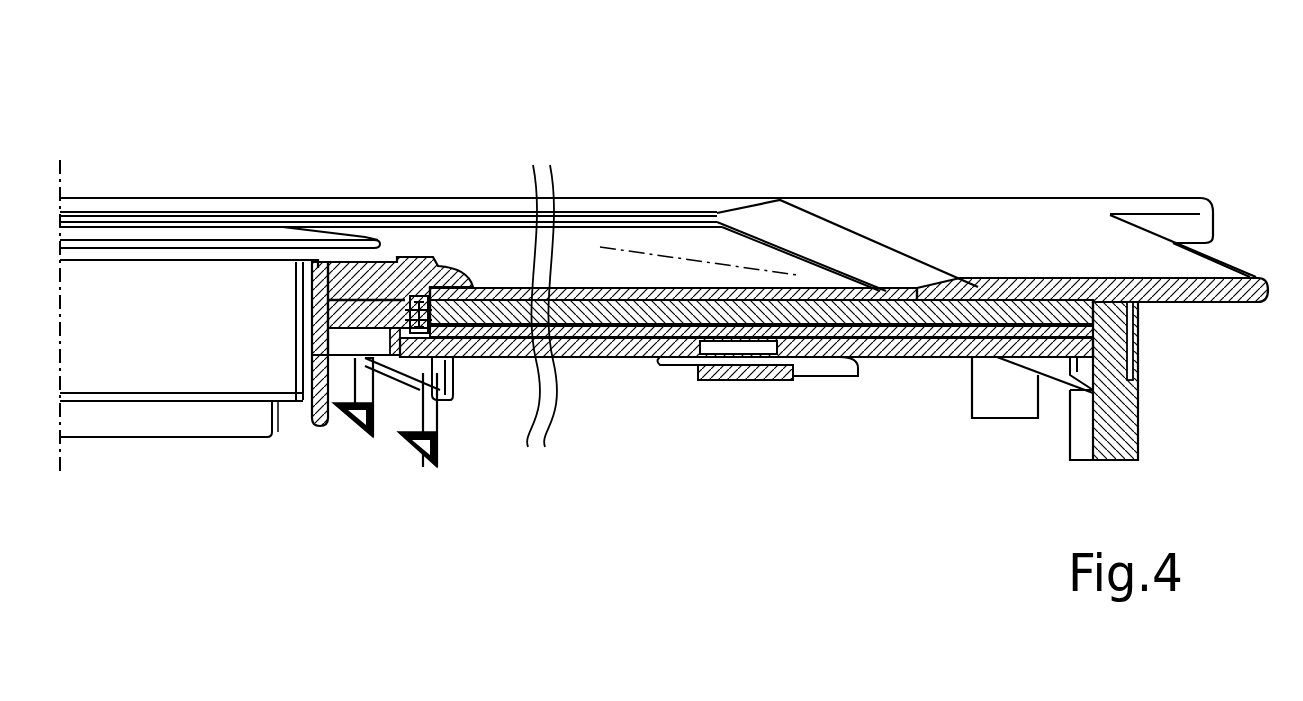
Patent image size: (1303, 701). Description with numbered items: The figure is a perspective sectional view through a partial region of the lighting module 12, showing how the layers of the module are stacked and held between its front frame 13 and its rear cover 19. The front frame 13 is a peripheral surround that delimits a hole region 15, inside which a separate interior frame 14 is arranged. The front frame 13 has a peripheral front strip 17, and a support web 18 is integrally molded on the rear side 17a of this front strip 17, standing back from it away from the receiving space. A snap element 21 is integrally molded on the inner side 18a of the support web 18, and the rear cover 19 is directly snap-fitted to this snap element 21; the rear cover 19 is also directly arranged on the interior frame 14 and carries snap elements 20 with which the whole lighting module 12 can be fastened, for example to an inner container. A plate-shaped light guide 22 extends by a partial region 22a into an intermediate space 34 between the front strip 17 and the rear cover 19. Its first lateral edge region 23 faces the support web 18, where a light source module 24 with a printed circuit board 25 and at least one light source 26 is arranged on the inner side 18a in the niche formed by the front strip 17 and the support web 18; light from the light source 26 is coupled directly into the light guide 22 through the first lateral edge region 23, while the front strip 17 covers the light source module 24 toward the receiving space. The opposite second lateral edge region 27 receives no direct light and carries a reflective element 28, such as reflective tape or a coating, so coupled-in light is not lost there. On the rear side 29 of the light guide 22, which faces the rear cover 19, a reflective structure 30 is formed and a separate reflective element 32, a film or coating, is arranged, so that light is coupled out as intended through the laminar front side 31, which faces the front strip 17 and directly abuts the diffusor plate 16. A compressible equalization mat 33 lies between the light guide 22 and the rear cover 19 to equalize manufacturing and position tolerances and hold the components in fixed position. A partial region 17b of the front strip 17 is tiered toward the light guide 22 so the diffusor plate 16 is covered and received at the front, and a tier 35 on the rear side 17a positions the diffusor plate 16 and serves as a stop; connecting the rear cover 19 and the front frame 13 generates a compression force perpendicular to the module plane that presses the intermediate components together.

The lighting module 12 is at (660, 200).
The front frame 13 is at (660, 206).
The interior frame 14 is at (268, 380).
The hole region 15 is at (623, 210).
The diffusor plate 16 is at (505, 243).
The front strip 17 is at (1017, 228).
The rear side of the front strip 17a is at (1193, 302).
The partial region of the front strip 17b is at (845, 205).
The support web 18 is at (1095, 419).
The inner side of the support web 18a is at (1078, 437).
The rear cover 19 is at (617, 362).
The snap elements 20 is at (348, 425).
The snap element 21 is at (1053, 367).
The plate-shaped light guide 22 is at (700, 300).
The partial region of the light guide 22a is at (985, 300).
The first lateral edge region 23 is at (1075, 305).
The light source module 24 is at (1082, 302).
The printed circuit board 25 is at (1085, 305).
The light source 26 is at (1080, 300).
The second lateral edge region 27 is at (412, 300).
The reflective element 28 is at (418, 345).
The rear side of the light guide 29 is at (652, 310).
The reflective structure 30 is at (572, 335).
The front side 31 is at (748, 325).
The reflective element 32 is at (882, 345).
The compressible equalization mat 33 is at (820, 372).
The intermediate space 34 is at (987, 347).
The tier 35 is at (915, 290).